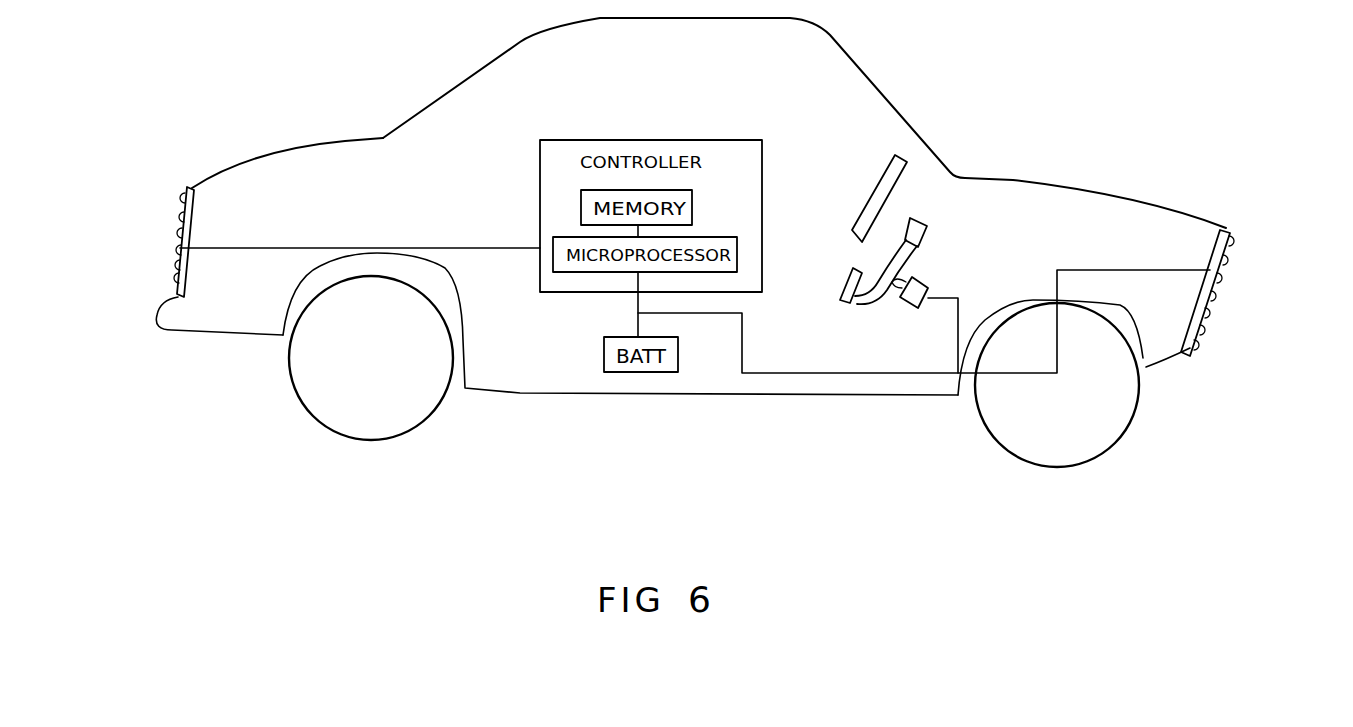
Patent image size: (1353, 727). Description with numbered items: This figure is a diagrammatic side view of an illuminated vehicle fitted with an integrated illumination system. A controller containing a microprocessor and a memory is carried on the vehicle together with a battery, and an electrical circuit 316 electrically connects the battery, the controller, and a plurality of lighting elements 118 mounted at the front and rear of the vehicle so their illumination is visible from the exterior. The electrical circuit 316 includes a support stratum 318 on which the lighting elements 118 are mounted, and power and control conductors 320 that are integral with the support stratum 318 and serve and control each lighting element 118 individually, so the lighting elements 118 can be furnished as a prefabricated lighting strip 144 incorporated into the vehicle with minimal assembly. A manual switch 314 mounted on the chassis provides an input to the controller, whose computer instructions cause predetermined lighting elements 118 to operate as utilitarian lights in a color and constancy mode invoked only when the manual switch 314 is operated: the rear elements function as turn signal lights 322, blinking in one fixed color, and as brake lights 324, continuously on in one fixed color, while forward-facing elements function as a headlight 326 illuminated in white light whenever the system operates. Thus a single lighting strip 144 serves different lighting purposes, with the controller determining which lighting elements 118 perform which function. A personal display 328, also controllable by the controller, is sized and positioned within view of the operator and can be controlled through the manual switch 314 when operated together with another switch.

The lighting elements 118 is at (691, 225).
The support stratum 318 is at (190, 188).
The power and control conductors 320 is at (197, 215).
The turn signal lights 322 is at (127, 247).
The brake lights 324 is at (150, 192).
The headlight 326 is at (1243, 233).
The electrical circuit 316 is at (279, 247).
The lighting strip 144 is at (177, 327).
The personal display 328 is at (888, 163).
The manual switch 314 is at (905, 309).